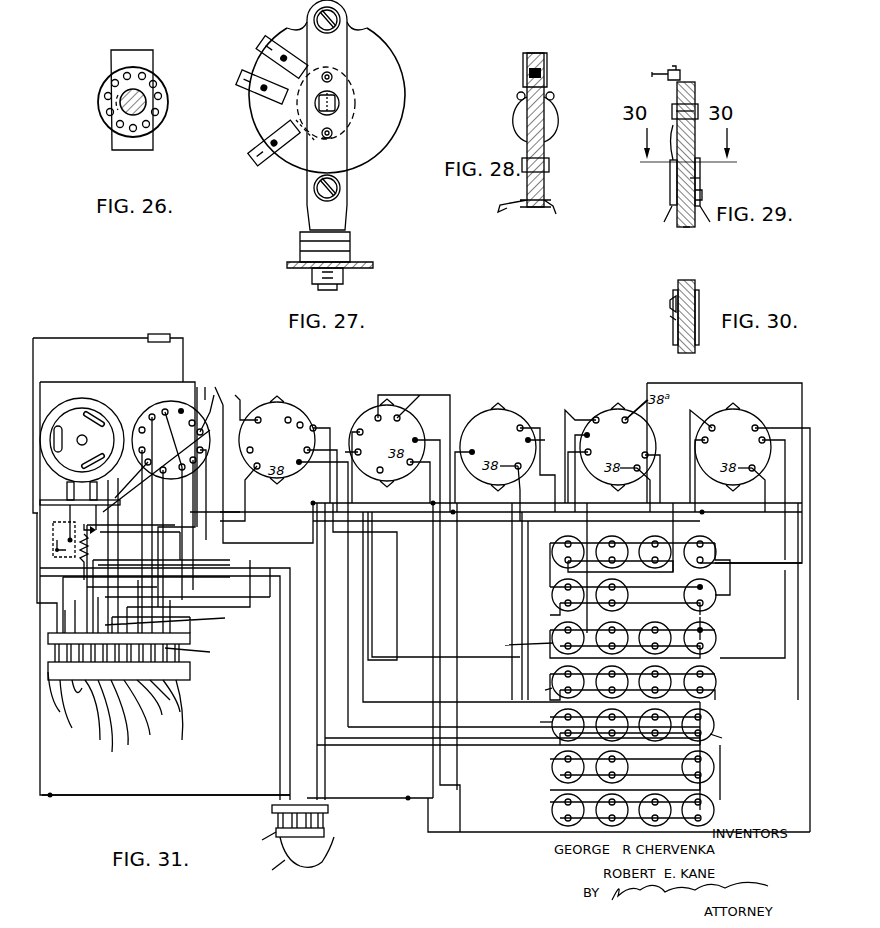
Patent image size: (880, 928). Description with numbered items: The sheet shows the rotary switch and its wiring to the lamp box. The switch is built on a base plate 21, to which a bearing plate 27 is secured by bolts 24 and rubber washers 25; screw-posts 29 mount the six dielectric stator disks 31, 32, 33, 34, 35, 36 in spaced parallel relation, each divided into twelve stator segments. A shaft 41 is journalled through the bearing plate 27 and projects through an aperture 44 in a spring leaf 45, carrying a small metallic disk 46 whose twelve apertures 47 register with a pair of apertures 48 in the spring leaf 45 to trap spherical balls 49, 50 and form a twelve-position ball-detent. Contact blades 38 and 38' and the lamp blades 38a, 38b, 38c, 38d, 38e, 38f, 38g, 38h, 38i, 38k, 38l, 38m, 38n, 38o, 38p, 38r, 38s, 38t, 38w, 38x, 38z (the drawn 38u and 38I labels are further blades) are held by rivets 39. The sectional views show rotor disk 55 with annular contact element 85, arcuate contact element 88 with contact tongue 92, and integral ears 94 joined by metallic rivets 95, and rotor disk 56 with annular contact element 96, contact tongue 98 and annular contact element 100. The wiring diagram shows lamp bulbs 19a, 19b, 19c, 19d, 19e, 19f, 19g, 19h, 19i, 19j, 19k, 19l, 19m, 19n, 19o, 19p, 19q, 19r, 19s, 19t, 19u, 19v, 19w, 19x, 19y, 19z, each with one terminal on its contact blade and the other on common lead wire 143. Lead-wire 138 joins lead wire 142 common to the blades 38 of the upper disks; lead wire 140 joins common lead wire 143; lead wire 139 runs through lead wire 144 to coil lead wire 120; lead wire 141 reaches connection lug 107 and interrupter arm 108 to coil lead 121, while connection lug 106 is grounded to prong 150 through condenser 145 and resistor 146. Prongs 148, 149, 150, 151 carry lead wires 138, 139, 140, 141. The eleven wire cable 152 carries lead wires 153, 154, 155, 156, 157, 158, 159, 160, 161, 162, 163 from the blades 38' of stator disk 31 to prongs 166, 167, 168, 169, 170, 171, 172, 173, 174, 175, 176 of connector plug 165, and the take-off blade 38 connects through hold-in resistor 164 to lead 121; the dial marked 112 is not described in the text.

In FIG. 27, the base plate 21 is at (345, 282).
In FIG. 27, the bolts 24 is at (300, 236).
In FIG. 27, the rubber washers 25 is at (350, 256).
In FIG. 27, the bearing plate 27 is at (347, 212).
In FIG. 27, the screw-posts 29 is at (347, 196).
In FIG. 31, the stator disk 31 is at (150, 412).
In FIG. 31, the stator disk 32 is at (277, 402).
In FIG. 31, the stator disk 33 is at (387, 405).
In FIG. 31, the stator disk 34 is at (498, 409).
In FIG. 29, the stator disk 35 is at (690, 82).
In FIG. 30, the stator disk 35 is at (690, 280).
In FIG. 31, the stator disk 35 is at (618, 409).
In FIG. 27, the stator disk 36 is at (262, 148).
In FIG. 28, the stator disk 36 is at (541, 192).
In FIG. 31, the stator disk 36 is at (733, 409).
In FIG. 27, the contact blade 38 is at (268, 151).
In FIG. 28, the contact blade 38 is at (527, 220).
In FIG. 31, the contact blade 38 is at (169, 432).
In FIG. 31, the contact blade 38' is at (213, 403).
In FIG. 28, the rivets 39 is at (549, 166).
In FIG. 29, the rivets 39 is at (698, 106).
In FIG. 26, the shaft 41 is at (141, 91).
In FIG. 27, the shaft 41 is at (339, 103).
In FIG. 27, the aperture 44 is at (300, 108).
In FIG. 26, the spring leaf 45 is at (125, 150).
In FIG. 27, the spring leaf 45 is at (309, 165).
In FIG. 26, the metallic disk 46 is at (166, 91).
In FIG. 26, the apertures 47 is at (105, 96).
In FIG. 27, the apertures 48 is at (332, 77).
In FIG. 27, the spherical ball 49 is at (330, 60).
In FIG. 27, the spherical ball 50 is at (333, 138).
In FIG. 29, the rotor disk 55 is at (686, 228).
In FIG. 28, the rotor disk 56 is at (538, 53).
In FIG. 29, the annular contact element 85 is at (672, 176).
In FIG. 30, the annular contact element 85 is at (673, 330).
In FIG. 29, the arcuate contact element 88 is at (700, 178).
In FIG. 29, the contact tongue 92 is at (700, 168).
In FIG. 30, the contact tongue 92 is at (699, 300).
In FIG. 29, the ears 94 is at (687, 223).
In FIG. 29, the metallic rivets 95 is at (702, 194).
In FIG. 28, the annular contact element 96 is at (516, 97).
In FIG. 28, the contact tongue 98 is at (515, 120).
In FIG. 28, the annular contact element 100 is at (554, 97).
In FIG. 31, the connection lug 106 is at (84, 510).
In FIG. 31, the connection lug 107 is at (57, 546).
In FIG. 31, the interrupter arm 108 is at (80, 509).
In FIG. 31, the dial 112 is at (92, 400).
In FIG. 31, the lead wire 120 is at (95, 441).
In FIG. 31, the lead 121 is at (78, 440).
In FIG. 31, the lead-wire 138 is at (320, 770).
In FIG. 31, the lead wire 139 is at (288, 770).
In FIG. 31, the lead wire 140 is at (375, 798).
In FIG. 31, the lead wire 141 is at (193, 795).
In FIG. 31, the lead wire 142 is at (470, 512).
In FIG. 31, the common lead wire 143 is at (452, 800).
In FIG. 31, the lead wire 144 is at (245, 575).
In FIG. 31, the condenser 145 is at (102, 521).
In FIG. 31, the resistor 146 is at (84, 570).
In FIG. 31, the prong 148 is at (328, 830).
In FIG. 31, the prong 149 is at (269, 871).
In FIG. 31, the prong 150 is at (322, 862).
In FIG. 31, the prong 151 is at (256, 845).
In FIG. 31, the eleven wire cable 152 is at (118, 338).
In FIG. 31, the lead wire 153 is at (140, 382).
In FIG. 31, the lead wire 154 is at (177, 439).
In FIG. 31, the lead wire 155 is at (215, 548).
In FIG. 31, the lead wire 156 is at (200, 525).
In FIG. 31, the lead wire 157 is at (224, 505).
In FIG. 31, the lead wire 158 is at (140, 560).
In FIG. 31, the lead wire 159 is at (158, 606).
In FIG. 31, the lead wire 160 is at (140, 490).
In FIG. 31, the lead wire 161 is at (201, 651).
In FIG. 31, the lead wire 162 is at (175, 652).
In FIG. 31, the lead wire 163 is at (196, 632).
In FIG. 31, the hold-in resistor 164 is at (160, 334).
In FIG. 31, the connector plug 165 is at (184, 717).
In FIG. 31, the prong 166 is at (61, 697).
In FIG. 31, the prong 167 is at (76, 710).
In FIG. 31, the prong 168 is at (89, 689).
In FIG. 31, the prong 169 is at (90, 719).
In FIG. 31, the prong 170 is at (104, 725).
In FIG. 31, the prong 171 is at (130, 720).
In FIG. 31, the prong 172 is at (148, 712).
In FIG. 31, the prong 173 is at (156, 699).
In FIG. 31, the prong 174 is at (180, 698).
In FIG. 31, the prong 175 is at (170, 700).
In FIG. 31, the prong 176 is at (190, 672).
In FIG. 31, the lamp bulb 19a is at (712, 547).
In FIG. 31, the lamp bulb 19b is at (666, 544).
In FIG. 31, the lamp bulb 19c is at (622, 540).
In FIG. 31, the lamp bulb 19d is at (553, 556).
In FIG. 31, the lamp bulb 19e is at (708, 582).
In FIG. 31, the lamp bulb 19f is at (627, 598).
In FIG. 31, the lamp bulb 19g is at (553, 600).
In FIG. 31, the lamp bulb 19h is at (716, 638).
In FIG. 31, the lamp bulb 19i is at (655, 622).
In FIG. 31, the lamp bulb 19j is at (553, 633).
In FIG. 31, the lamp bulb 19k is at (517, 647).
In FIG. 31, the lamp bulb 19l is at (716, 682).
In FIG. 31, the lamp bulb 19m is at (660, 697).
In FIG. 31, the lamp bulb 19n is at (538, 689).
In FIG. 31, the lamp bulb 19o is at (552, 678).
In FIG. 31, the lamp bulb 19p is at (713, 722).
In FIG. 31, the lamp bulb 19q is at (727, 740).
In FIG. 31, the lamp bulb 19r is at (536, 717).
In FIG. 31, the lamp bulb 19s is at (534, 725).
In FIG. 31, the lamp bulb 19t is at (713, 762).
In FIG. 31, the lamp bulb 19u is at (626, 770).
In FIG. 31, the lamp bulb 19v is at (552, 765).
In FIG. 31, the lamp bulb 19w is at (713, 808).
In FIG. 31, the lamp bulb 19x is at (662, 797).
In FIG. 31, the lamp bulb 19y is at (618, 797).
In FIG. 31, the lamp bulb 19z is at (556, 823).
In FIG. 29, the contact blade 38a is at (676, 66).
In FIG. 30, the contact blade 38a is at (670, 304).
In FIG. 31, the contact blade 38a is at (288, 420).
In FIG. 27, the contact 38u is at (265, 40).
In FIG. 27, the contact 38I is at (242, 95).
In FIG. 31, the contact blade 38p is at (258, 420).
In FIG. 31, the contact blade 38i is at (300, 425).
In FIG. 31, the contact blade 38e is at (313, 428).
In FIG. 31, the contact blade 38f is at (263, 447).
In FIG. 31, the contact blade 38r is at (301, 441).
In FIG. 31, the contact blade 38x is at (378, 418).
In FIG. 31, the contact blade 38s is at (377, 427).
In FIG. 31, the contact blade 38h is at (369, 457).
In FIG. 31, the contact blade 38m is at (380, 470).
In FIG. 31, the contact blade 38k is at (520, 428).
In FIG. 31, the contact blade 38t is at (472, 452).
In FIG. 31, the contact blade 38n is at (514, 443).
In FIG. 31, the contact blade 38b is at (596, 420).
In FIG. 31, the contact blade 38c is at (602, 427).
In FIG. 31, the contact blade 38o is at (602, 447).
In FIG. 31, the contact blade 38z is at (637, 446).
In FIG. 31, the contact blade 38l is at (712, 428).
In FIG. 31, the contact blade 38w is at (755, 428).
In FIG. 31, the contact blade 38d is at (716, 443).
In FIG. 31, the contact blade 38g is at (755, 446).